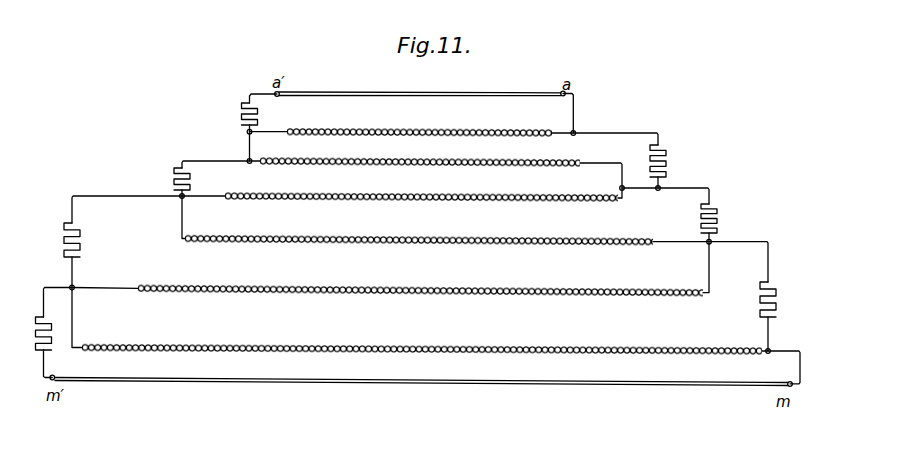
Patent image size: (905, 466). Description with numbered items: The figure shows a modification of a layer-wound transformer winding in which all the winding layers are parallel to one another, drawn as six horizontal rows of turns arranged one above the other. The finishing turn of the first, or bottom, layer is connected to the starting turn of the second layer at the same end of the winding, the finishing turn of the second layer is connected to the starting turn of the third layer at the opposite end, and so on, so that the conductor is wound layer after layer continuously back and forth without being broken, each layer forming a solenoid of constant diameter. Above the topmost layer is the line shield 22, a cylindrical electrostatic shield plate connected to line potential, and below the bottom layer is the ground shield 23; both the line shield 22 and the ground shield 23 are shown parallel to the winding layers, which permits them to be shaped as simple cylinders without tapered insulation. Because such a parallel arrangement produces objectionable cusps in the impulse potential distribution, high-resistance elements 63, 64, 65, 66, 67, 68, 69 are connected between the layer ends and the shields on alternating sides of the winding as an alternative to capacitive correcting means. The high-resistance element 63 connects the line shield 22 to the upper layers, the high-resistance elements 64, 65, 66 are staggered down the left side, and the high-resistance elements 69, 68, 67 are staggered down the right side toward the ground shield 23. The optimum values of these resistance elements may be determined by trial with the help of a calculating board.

The line shield 22 is at (484, 92).
The ground shield 23 is at (477, 384).
The high-resistance element 63 is at (240, 111).
The high-resistance element 64 is at (173, 178).
The high-resistance element 65 is at (63, 235).
The high-resistance element 66 is at (51, 317).
The high-resistance element 67 is at (777, 303).
The high-resistance element 68 is at (718, 220).
The high-resistance element 69 is at (667, 158).